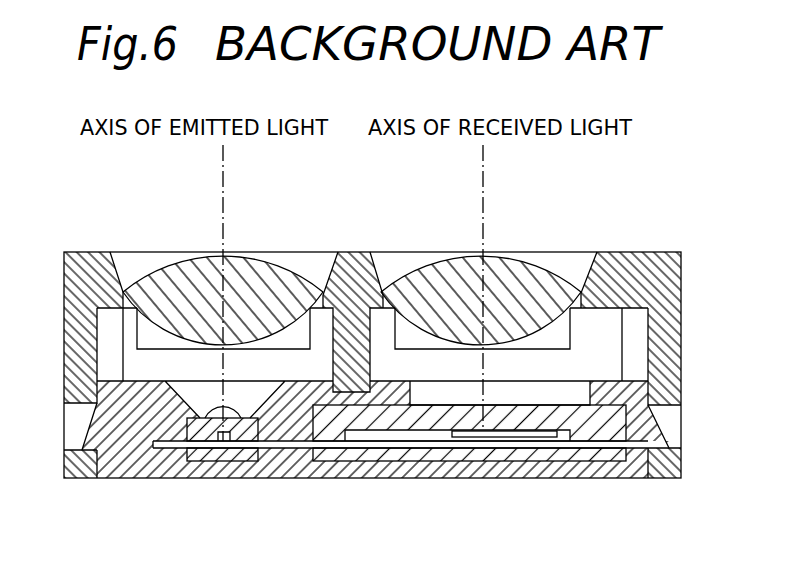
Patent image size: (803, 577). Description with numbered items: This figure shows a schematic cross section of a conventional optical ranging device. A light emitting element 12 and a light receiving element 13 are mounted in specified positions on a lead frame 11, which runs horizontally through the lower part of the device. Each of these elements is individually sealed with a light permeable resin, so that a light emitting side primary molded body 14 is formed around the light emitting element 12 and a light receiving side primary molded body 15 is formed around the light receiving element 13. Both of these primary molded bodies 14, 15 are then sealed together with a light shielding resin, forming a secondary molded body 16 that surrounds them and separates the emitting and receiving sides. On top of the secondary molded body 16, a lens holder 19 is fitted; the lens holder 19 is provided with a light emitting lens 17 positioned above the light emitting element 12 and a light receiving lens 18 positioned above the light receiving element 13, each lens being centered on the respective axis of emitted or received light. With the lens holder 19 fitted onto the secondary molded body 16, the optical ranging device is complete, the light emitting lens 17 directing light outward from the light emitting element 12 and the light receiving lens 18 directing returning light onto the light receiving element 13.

The lead frame 11 is at (163, 453).
The light emitting element 12 is at (223, 446).
The light receiving element 13 is at (420, 437).
The light emitting side primary molded body 14 is at (243, 458).
The light receiving side primary molded body 15 is at (547, 457).
The secondary molded body 16 is at (120, 455).
The light emitting lens 17 is at (174, 266).
The light receiving lens 18 is at (512, 259).
The lens holder 19 is at (682, 287).